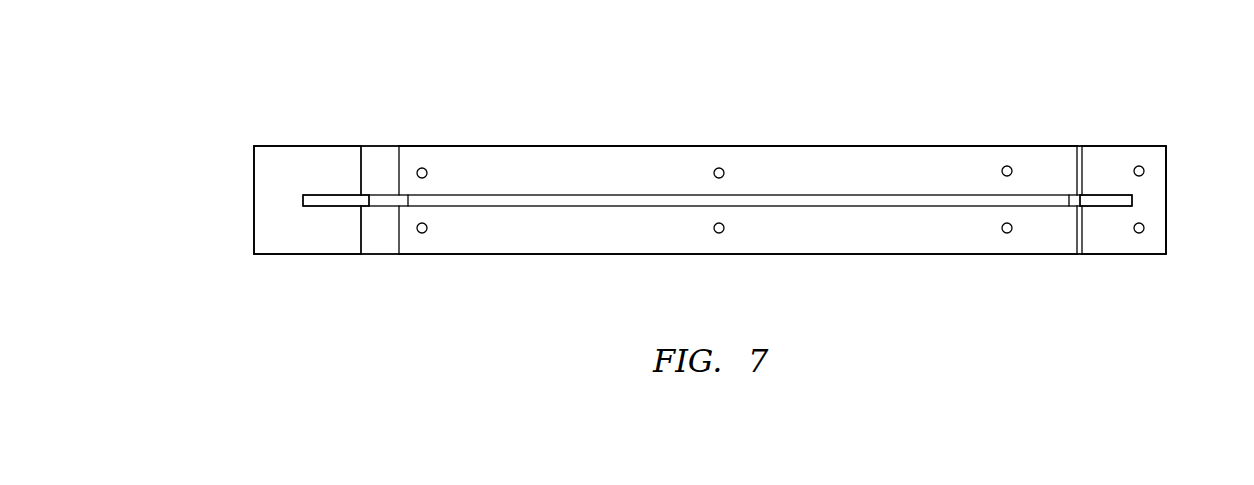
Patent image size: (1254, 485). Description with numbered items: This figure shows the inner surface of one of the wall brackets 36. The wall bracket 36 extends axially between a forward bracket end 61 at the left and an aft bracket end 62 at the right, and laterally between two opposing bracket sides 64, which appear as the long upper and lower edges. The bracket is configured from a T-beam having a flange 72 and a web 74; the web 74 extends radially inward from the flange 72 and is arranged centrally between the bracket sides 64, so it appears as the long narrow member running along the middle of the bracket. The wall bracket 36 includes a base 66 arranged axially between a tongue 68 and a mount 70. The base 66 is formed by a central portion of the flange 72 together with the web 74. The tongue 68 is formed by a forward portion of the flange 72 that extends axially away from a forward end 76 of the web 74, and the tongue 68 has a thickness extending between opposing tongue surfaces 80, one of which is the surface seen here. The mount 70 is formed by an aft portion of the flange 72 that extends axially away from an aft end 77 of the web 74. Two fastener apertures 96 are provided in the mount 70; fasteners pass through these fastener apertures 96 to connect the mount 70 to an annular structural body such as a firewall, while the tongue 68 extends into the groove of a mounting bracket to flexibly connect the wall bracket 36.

The wall bracket 36 is at (275, 58).
The forward bracket end 61 is at (254, 199).
The aft bracket end 62 is at (1166, 200).
The bracket sides 64 is at (868, 146).
The base 66 is at (510, 145).
The tongue 68 is at (276, 144).
The mount 70 is at (1143, 143).
The flange 72 is at (587, 146).
The web 74 is at (580, 197).
The forward end of the web 76 is at (300, 204).
The aft end of the web 77 is at (1133, 201).
The tongue surfaces 80 is at (268, 168).
The fastener apertures 96 is at (1145, 170).